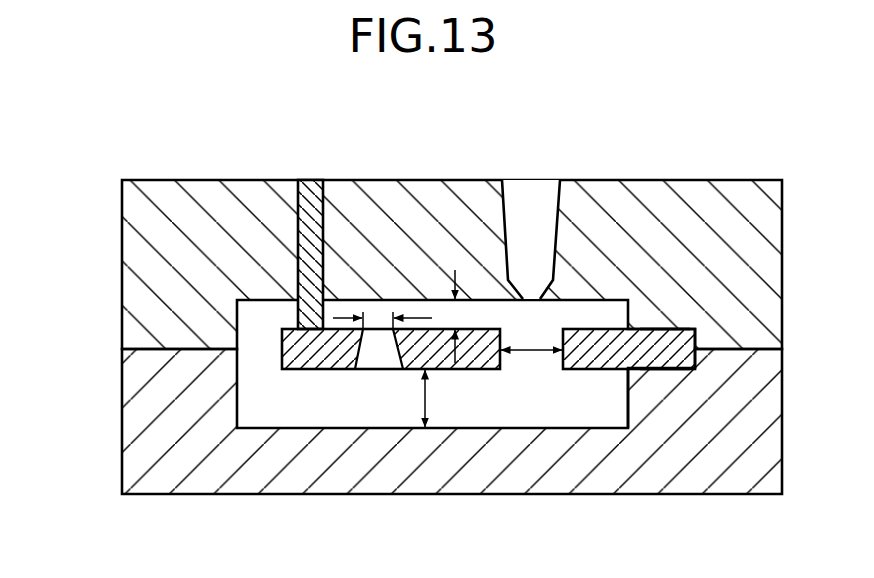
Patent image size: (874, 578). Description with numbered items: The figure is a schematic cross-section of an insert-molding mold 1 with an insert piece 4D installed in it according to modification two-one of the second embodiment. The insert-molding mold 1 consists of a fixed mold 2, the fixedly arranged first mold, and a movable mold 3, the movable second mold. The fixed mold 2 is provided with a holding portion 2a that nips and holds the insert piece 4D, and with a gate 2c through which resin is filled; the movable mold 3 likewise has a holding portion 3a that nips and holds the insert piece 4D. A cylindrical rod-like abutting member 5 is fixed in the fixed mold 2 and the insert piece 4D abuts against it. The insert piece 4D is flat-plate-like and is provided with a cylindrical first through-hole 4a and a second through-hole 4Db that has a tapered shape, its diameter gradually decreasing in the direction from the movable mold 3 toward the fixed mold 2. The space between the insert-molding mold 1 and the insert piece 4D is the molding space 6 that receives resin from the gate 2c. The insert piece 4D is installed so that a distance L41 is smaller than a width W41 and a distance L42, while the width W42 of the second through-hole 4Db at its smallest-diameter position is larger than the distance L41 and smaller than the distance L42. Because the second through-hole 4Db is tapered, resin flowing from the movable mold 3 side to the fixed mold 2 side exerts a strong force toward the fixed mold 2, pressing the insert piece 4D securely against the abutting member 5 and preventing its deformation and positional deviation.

The insert-molding mold 1 is at (396, 337).
The fixed mold 2 is at (145, 270).
The movable mold 3 is at (418, 421).
The abutting member 5 is at (310, 192).
The gate 2c is at (507, 217).
The insert piece 4D is at (391, 440).
The second through-hole 4Db is at (360, 350).
The first through-hole 4a is at (547, 330).
The holding portion 2a is at (672, 330).
The holding portion 3a is at (672, 366).
The molding space 6 is at (629, 397).
The width of second through-hole W42 is at (380, 316).
The distance L41 is at (452, 314).
The width W41 is at (523, 352).
The distance L42 is at (428, 404).